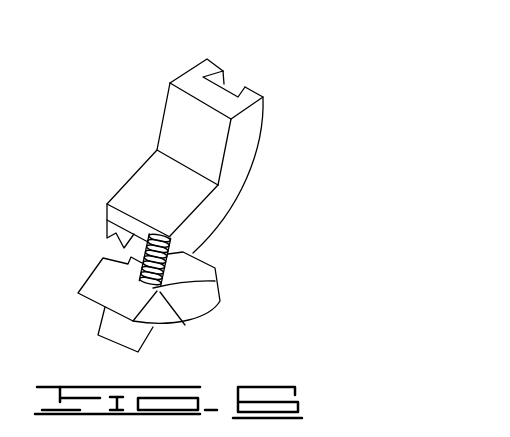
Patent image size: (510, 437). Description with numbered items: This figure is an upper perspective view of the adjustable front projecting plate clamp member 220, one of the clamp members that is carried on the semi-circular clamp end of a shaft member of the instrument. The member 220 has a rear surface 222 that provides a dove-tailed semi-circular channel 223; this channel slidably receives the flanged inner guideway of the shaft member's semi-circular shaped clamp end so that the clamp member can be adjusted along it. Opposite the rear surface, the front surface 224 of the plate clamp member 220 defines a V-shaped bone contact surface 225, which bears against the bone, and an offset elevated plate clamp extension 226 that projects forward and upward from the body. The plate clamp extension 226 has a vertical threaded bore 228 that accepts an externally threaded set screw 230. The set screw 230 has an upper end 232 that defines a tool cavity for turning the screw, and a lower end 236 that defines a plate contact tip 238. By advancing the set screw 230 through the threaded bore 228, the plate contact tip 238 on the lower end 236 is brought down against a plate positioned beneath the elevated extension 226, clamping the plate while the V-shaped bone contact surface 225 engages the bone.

The adjustable front projecting plate clamp member 220 is at (273, 177).
The rear surface 222 is at (263, 97).
The dove-tailed semi-circular channel 223 is at (233, 80).
The front surface 224 is at (164, 117).
The V-shaped bone contact surface 225 is at (136, 188).
The offset elevated plate clamp extension 226 is at (205, 295).
The vertical threaded bore 228 is at (160, 290).
The externally threaded set screw 230 is at (192, 250).
The upper end 232 is at (113, 332).
The lower end 236 is at (107, 220).
The plate contact tip 238 is at (178, 246).